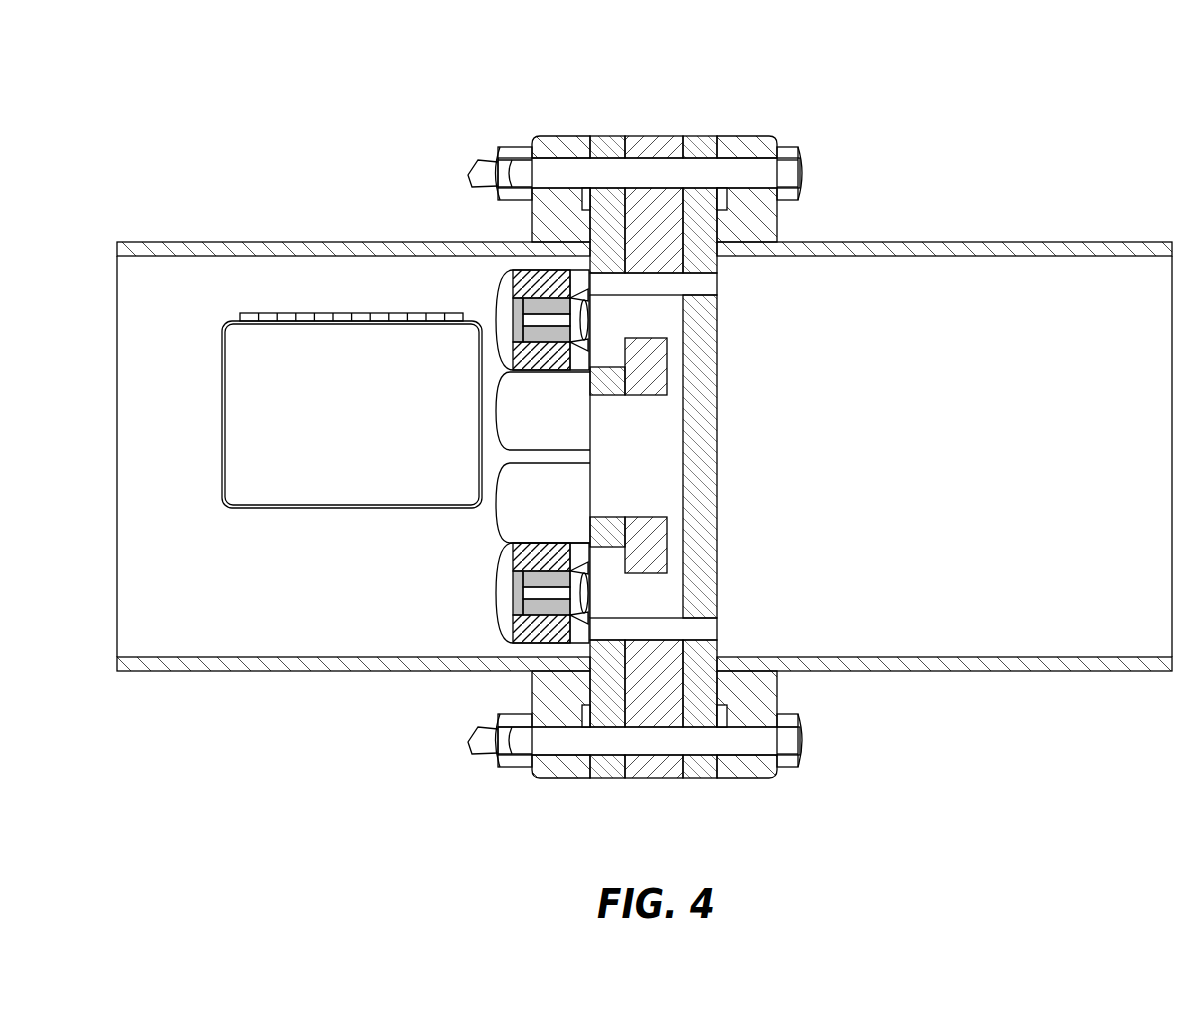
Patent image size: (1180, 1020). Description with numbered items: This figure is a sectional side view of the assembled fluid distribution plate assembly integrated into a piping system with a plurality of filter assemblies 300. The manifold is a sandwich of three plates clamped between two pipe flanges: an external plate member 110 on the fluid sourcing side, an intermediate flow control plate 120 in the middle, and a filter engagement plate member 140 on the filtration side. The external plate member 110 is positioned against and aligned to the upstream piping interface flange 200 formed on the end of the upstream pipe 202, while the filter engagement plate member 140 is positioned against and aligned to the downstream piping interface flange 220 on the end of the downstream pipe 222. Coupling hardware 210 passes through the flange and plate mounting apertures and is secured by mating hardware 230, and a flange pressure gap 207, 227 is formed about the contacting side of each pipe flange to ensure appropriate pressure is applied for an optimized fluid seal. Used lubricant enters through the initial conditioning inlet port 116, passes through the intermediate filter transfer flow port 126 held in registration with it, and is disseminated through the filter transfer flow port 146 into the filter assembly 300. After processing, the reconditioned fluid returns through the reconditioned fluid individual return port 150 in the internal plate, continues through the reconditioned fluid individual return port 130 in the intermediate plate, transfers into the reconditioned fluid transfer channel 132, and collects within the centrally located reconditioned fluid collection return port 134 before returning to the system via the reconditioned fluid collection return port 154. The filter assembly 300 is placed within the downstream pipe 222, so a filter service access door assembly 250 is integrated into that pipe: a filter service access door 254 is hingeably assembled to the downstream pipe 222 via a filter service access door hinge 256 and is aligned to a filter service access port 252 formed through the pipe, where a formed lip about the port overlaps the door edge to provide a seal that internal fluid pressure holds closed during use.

The external plate member 110 is at (700, 136).
The intermediate flow control plate 120 is at (655, 136).
The filter engagement plate member 140 is at (608, 136).
The initial conditioning inlet port 116 is at (750, 456).
The intermediate filter transfer flow port 126 is at (706, 283).
The filter transfer flow port 146 is at (614, 358).
The reconditioned fluid individual return port 130 is at (710, 330).
The reconditioned fluid individual return port 150 is at (649, 321).
The reconditioned fluid transfer channel 132 is at (676, 367).
The reconditioned fluid collection return port 134 is at (710, 506).
The reconditioned fluid collection return port 154 is at (653, 455).
The upstream piping interface flange 200 is at (906, 429).
The upstream pipe 202 is at (642, 428).
The flange pressure gap 207 is at (723, 200).
The coupling hardware 210 is at (801, 175).
The downstream piping interface flange 220 is at (405, 429).
The downstream pipe 222 is at (157, 242).
The flange pressure gap 227 is at (583, 200).
The mating hardware 230 is at (517, 145).
The filter service access door assembly 250 is at (307, 422).
The filter service access port 252 is at (222, 400).
The filter service access door 254 is at (225, 433).
The filter service access door hinge 256 is at (352, 313).
The filter assembly 300 is at (492, 592).